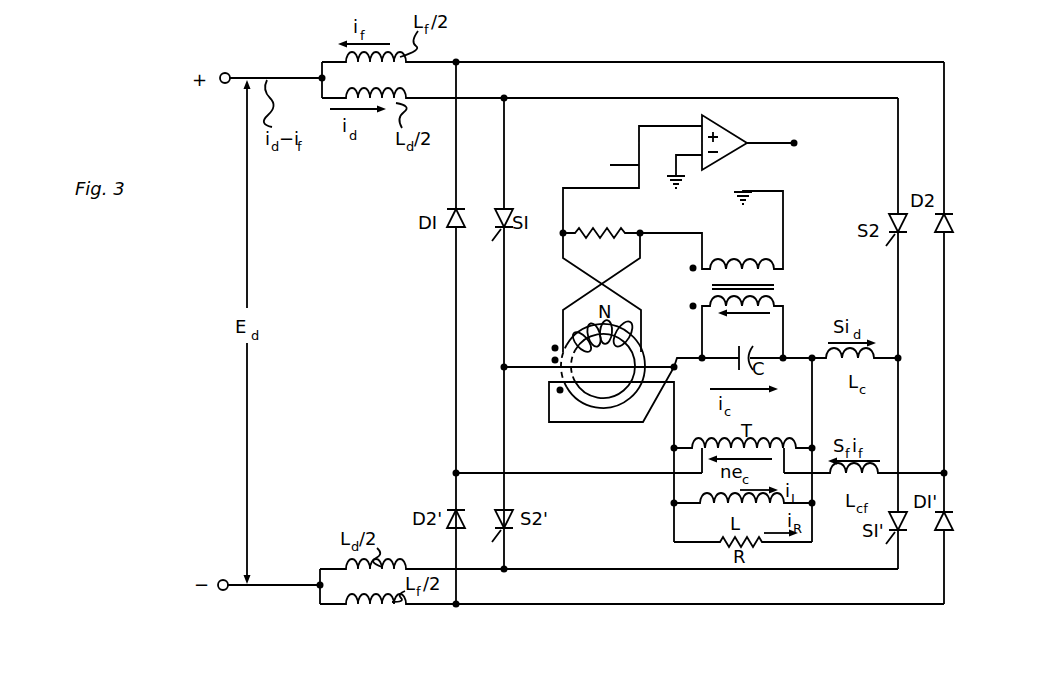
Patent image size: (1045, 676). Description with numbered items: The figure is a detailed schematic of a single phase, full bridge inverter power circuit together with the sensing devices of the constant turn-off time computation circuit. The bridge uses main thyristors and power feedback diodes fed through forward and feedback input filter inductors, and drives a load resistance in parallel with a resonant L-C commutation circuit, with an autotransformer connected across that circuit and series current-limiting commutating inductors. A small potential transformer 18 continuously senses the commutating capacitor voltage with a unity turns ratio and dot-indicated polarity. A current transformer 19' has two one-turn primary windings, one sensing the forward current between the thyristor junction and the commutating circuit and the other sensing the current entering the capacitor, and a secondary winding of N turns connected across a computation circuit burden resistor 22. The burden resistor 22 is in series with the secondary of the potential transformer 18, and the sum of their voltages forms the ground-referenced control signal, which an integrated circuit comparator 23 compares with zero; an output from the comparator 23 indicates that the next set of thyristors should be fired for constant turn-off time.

The potential transformer 18 is at (743, 268).
The current transformer 19' is at (582, 363).
The computation circuit burden resistor 22 is at (614, 237).
The integrated circuit comparator 23 is at (730, 130).